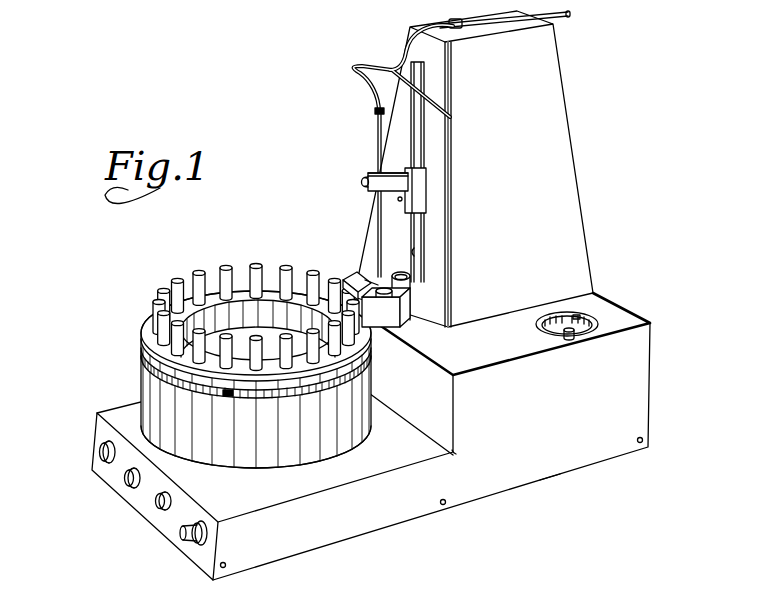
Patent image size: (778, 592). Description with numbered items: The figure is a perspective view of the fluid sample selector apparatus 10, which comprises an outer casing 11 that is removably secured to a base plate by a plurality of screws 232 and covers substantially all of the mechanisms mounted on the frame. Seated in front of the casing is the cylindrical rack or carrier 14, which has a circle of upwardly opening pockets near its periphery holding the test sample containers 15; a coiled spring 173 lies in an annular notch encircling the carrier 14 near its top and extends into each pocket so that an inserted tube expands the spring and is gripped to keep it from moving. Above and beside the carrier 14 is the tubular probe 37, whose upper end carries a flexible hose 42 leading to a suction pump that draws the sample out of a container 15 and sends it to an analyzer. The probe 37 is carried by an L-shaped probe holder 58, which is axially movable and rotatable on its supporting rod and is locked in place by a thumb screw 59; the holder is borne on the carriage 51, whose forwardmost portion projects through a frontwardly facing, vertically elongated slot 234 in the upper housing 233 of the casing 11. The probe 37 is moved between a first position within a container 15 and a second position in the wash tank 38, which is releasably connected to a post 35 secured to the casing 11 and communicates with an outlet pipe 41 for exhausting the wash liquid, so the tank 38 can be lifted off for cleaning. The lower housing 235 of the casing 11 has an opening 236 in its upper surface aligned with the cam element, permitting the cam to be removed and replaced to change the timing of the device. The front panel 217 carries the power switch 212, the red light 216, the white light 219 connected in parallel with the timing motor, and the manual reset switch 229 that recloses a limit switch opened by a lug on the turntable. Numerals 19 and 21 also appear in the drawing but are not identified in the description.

The fluid sample selector apparatus 10 is at (263, 203).
The outer casing 11 is at (398, 436).
The rack 14 is at (216, 346).
The test sample container 15 is at (168, 283).
The coiled spring 173 is at (140, 358).
The switch 212 is at (100, 453).
The white light 219 is at (124, 481).
The manual reset switch 229 is at (158, 502).
The red light 216 is at (176, 538).
The front panel 217 is at (188, 504).
The screws 232 is at (443, 503).
The lower housing 235 is at (548, 468).
The upper housing 233 is at (578, 194).
The vertically elongated slot 234 is at (418, 252).
The opening 236 is at (588, 320).
The flexible hose 42 is at (405, 50).
The tubular probe 37 is at (378, 226).
The L-shaped probe holder 58 is at (372, 177).
The thumb screw 59 is at (408, 168).
The carriage 51 is at (421, 201).
The outlet pipe 41 is at (358, 272).
The post 35 is at (410, 288).
The wash tank 38 is at (388, 316).
The element 19 is at (472, 583).
The element 21 is at (509, 588).